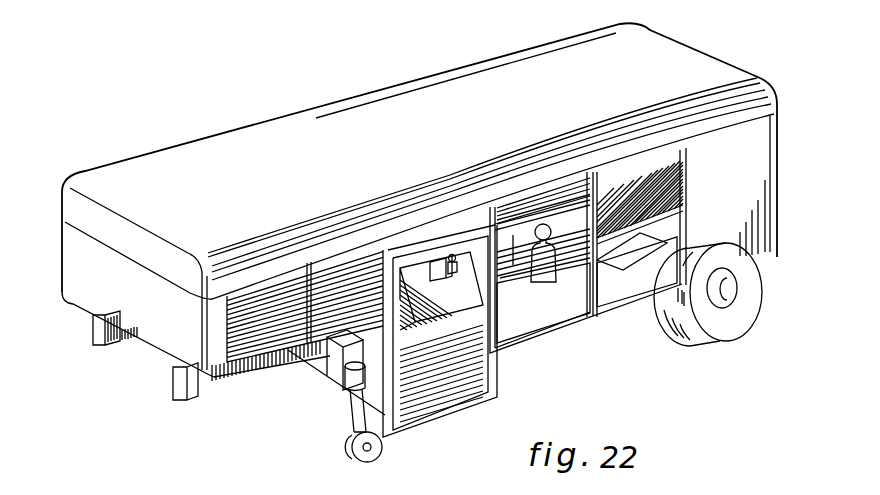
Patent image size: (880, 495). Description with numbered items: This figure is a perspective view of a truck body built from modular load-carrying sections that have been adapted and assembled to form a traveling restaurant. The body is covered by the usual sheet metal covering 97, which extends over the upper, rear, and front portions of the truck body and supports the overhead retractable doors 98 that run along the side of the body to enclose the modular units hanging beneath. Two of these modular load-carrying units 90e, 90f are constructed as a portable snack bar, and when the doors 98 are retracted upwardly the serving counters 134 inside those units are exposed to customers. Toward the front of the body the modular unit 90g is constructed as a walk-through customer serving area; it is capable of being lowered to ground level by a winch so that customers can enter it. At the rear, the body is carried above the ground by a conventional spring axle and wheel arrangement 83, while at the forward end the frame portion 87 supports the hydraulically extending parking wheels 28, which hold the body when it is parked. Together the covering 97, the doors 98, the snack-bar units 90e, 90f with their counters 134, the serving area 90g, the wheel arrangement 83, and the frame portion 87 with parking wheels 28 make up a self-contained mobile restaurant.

The sheet metal covering 97 is at (533, 63).
The overhead retractable doors 98 is at (255, 296).
The modular unit 90g is at (468, 406).
The modular load-carrying unit 90e is at (569, 329).
The modular load-carrying unit 90f is at (641, 302).
The serving counters 134 is at (523, 285).
The spring axle and wheel arrangement 83 is at (737, 331).
The frame portion 87 is at (258, 372).
The hydraulically extending parking wheels 28 is at (352, 408).